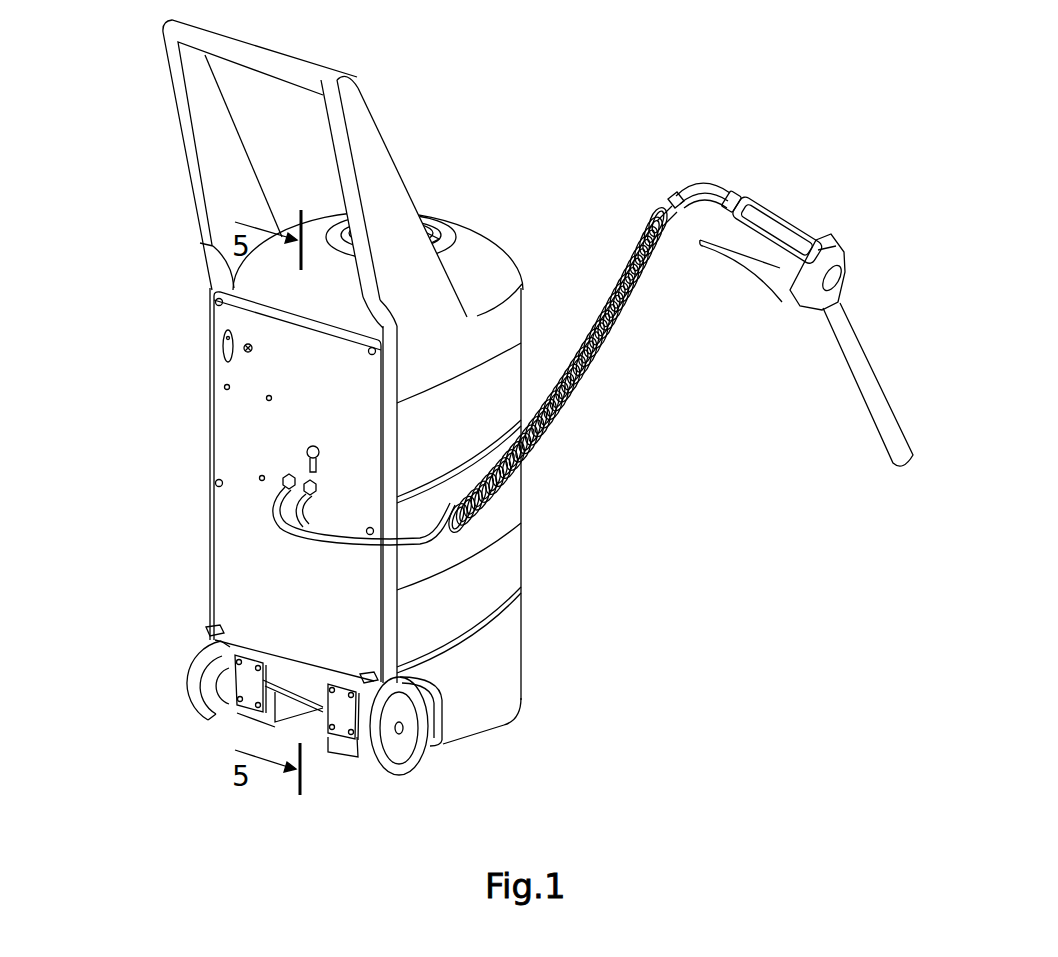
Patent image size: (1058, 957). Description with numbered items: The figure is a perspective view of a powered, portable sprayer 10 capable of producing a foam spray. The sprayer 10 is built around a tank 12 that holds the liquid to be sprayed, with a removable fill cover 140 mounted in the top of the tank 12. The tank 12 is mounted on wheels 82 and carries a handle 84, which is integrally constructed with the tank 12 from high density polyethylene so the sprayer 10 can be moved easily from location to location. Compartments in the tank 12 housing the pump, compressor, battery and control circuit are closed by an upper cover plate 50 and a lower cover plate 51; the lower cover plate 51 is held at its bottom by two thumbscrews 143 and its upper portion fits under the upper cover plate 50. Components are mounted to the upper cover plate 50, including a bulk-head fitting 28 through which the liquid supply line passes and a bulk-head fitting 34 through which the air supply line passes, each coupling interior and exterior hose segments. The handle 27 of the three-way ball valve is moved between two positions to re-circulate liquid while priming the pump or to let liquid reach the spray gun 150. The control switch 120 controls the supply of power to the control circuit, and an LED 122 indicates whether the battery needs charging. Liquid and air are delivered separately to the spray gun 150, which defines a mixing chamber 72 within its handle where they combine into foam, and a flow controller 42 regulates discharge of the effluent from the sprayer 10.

The sprayer 10 is at (570, 74).
The tank 12 is at (512, 576).
The handle 27 is at (313, 445).
The bulk-head fitting 28 is at (318, 484).
The bulk-head fitting 34 is at (283, 476).
The flow controller 42 is at (788, 302).
The upper cover plate 50 is at (225, 413).
The lower cover plate 51 is at (222, 598).
The mixing chamber 72 is at (778, 237).
The wheels 82 is at (424, 750).
The handle 84 is at (203, 37).
The control switch 120 is at (225, 346).
The LED 122 is at (246, 346).
The fill cover 140 is at (427, 211).
The thumbscrews 143 is at (212, 631).
The spray gun 150 is at (886, 299).